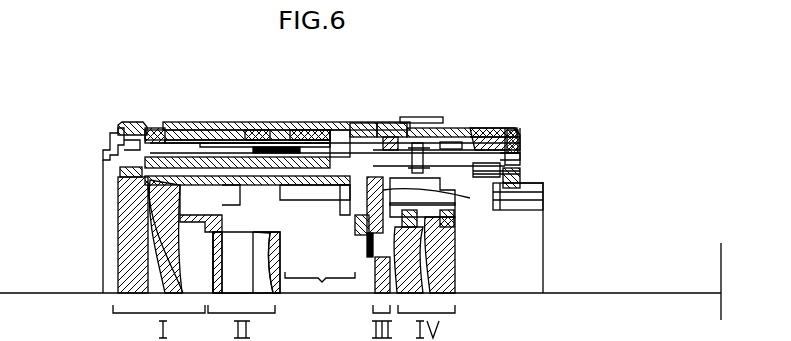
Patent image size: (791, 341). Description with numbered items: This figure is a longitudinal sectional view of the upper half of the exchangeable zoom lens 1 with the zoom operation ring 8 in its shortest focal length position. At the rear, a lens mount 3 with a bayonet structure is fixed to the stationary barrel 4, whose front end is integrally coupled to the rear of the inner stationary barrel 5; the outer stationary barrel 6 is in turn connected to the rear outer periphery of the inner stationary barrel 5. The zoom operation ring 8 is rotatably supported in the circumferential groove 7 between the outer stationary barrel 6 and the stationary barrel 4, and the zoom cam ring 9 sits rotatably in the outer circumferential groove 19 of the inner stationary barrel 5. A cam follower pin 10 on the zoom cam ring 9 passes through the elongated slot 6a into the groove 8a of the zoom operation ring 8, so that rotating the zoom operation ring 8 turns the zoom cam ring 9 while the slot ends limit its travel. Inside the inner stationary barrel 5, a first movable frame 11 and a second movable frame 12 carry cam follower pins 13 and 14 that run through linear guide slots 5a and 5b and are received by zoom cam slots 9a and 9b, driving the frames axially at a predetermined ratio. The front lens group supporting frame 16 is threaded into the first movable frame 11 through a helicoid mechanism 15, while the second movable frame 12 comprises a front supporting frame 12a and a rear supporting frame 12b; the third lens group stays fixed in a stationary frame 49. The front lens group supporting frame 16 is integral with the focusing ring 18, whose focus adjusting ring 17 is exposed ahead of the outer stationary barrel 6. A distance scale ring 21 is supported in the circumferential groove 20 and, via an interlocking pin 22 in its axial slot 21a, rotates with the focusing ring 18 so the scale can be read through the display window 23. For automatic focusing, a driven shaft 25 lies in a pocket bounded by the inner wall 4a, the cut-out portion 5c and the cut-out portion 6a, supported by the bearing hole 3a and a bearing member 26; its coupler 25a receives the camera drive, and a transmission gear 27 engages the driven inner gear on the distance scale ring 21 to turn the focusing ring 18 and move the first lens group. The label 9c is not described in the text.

The exchangeable zoom lens 1 is at (192, 120).
The lens mount 3 is at (540, 184).
The bearing hole 3a is at (521, 172).
The stationary barrel 4 is at (504, 138).
The inner wall 4a is at (518, 160).
The inner stationary barrel 5 is at (160, 175).
The linear guide slot 5a is at (278, 190).
The linear guide slot 5b is at (330, 195).
The cut-out portion 5c is at (363, 213).
The outer stationary barrel 6 is at (300, 124).
The circumferentially elongated slot 6a is at (390, 128).
The circumferential groove 7 is at (478, 129).
The zoom operation ring 8 is at (440, 124).
The groove 8a is at (447, 122).
The zoom cam ring 9 is at (188, 128).
The zoom cam slot 9a is at (236, 240).
The zoom cam slot 9b is at (322, 178).
The hub plate 9c is at (338, 130).
The cam follower pin 10 is at (412, 122).
The first movable frame 11 is at (157, 188).
The second movable frame 12 is at (320, 280).
The front supporting frame 12a is at (327, 244).
The rear supporting frame 12b is at (367, 238).
The cam follower pin 13 is at (260, 156).
The cam follower pin 14 is at (327, 140).
The helicoid mechanism 15 is at (170, 222).
The front lens group supporting frame 16 is at (120, 182).
The focus adjusting ring 17 is at (148, 122).
The focusing ring 18 is at (204, 135).
The outer circumferential groove 19 is at (215, 138).
The circumferential groove 20 is at (358, 145).
The distance scale ring 21 is at (232, 140).
The axial slot / driven inner gear 21a is at (442, 195).
The interlocking pin 22 is at (273, 128).
The display window 23 is at (357, 128).
The driven shaft 25 is at (496, 134).
The coupler 25a is at (520, 156).
The bearing member 26 is at (458, 138).
The transmission gear 27 is at (480, 205).
The stationary frame 49 is at (380, 282).